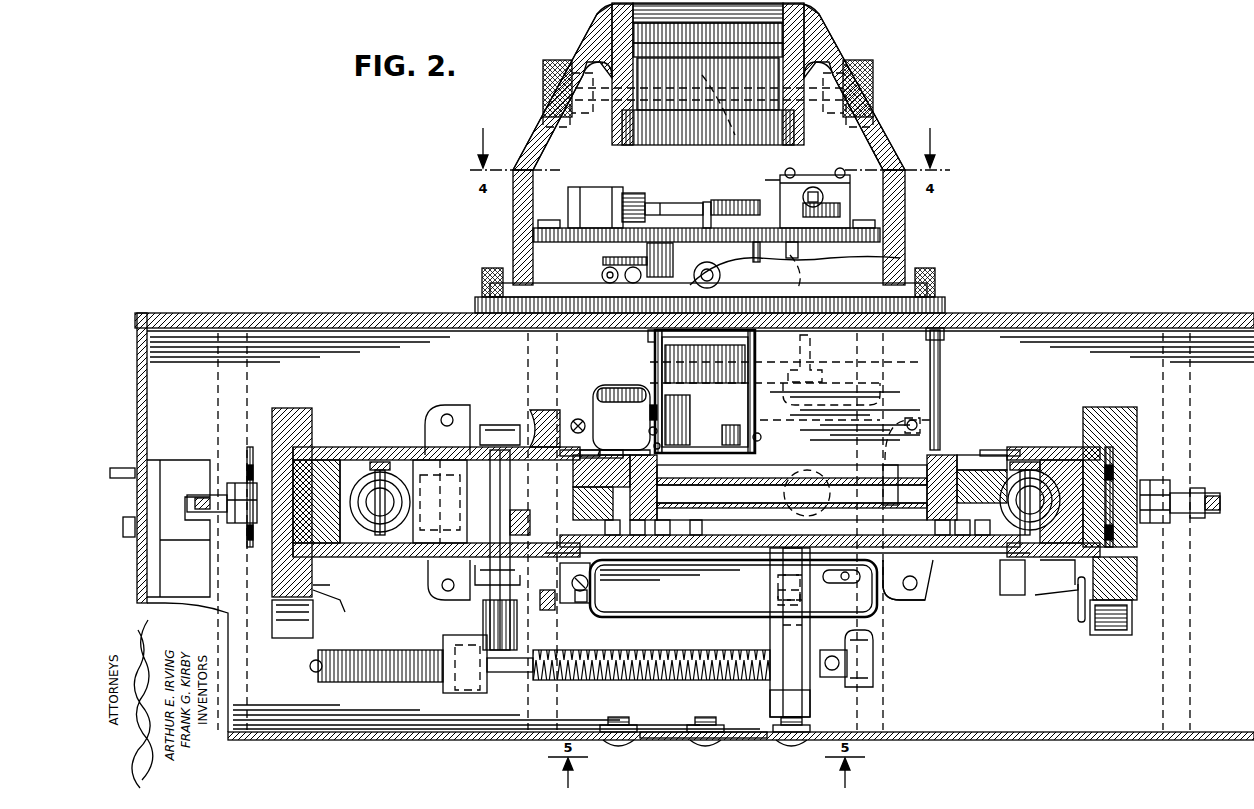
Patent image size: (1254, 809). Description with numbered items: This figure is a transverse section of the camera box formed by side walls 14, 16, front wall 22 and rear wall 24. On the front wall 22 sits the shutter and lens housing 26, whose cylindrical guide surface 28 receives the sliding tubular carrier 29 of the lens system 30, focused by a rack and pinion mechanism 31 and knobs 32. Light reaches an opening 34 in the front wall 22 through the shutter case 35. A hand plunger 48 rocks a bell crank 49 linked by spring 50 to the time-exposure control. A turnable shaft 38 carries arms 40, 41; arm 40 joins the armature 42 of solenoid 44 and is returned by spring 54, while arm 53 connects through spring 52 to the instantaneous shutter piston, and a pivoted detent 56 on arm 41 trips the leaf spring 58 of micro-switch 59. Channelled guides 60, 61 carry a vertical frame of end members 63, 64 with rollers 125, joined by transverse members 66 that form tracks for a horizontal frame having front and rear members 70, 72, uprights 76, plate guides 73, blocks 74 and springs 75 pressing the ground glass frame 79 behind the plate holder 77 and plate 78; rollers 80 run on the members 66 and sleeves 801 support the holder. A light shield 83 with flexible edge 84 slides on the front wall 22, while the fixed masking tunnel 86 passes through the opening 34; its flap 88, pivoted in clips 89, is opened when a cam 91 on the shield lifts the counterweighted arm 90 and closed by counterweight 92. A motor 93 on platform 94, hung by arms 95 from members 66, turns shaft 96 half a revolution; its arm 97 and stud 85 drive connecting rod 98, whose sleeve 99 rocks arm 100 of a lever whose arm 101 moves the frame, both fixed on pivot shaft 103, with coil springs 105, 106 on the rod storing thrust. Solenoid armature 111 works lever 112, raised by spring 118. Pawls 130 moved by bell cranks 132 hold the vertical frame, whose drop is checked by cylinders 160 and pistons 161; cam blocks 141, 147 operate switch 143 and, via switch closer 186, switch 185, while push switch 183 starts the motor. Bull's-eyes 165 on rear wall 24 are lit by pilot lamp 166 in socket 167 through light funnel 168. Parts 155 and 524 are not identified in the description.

The side wall 14 is at (1253, 575).
The side wall 16 is at (148, 425).
The front wall 22 is at (1120, 320).
The rear wall 24 is at (470, 740).
The shutter and lens housing 26 is at (897, 218).
The cylindrical guide surface 28 is at (622, 130).
The tubular carrier 29 is at (790, 50).
The lens system 30 is at (640, 60).
The rack and pinion mechanism 31 is at (726, 109).
The focusing knobs 32 is at (874, 74).
The opening 34 is at (648, 336).
The case 35 is at (800, 258).
The turnable shaft 38 is at (758, 250).
The arm 40 is at (842, 210).
The arm 41 is at (705, 208).
The armature 42 is at (822, 195).
The solenoid 44 is at (781, 178).
The hand actuated plunger 48 is at (720, 278).
The bell crank 49 is at (660, 275).
The spring 50 is at (647, 258).
The spring 52 is at (602, 274).
The arm 53 is at (605, 256).
The spring 54 is at (745, 205).
The pivoted detent 56 is at (655, 208).
The leaf spring 58 is at (638, 198).
The micro-switch 59 is at (608, 190).
The channelled guide 60 is at (1125, 570).
The channelled guide 61 is at (290, 412).
The vertical end frame member 63 is at (322, 445).
The vertical end frame member 64 is at (1100, 450).
The transverse member 66 is at (1015, 555).
The rectangular member 70 is at (996, 450).
The rectangular member 72 is at (985, 548).
The plate guide 73 is at (962, 458).
The blocks 74 is at (962, 548).
The springs 75 is at (942, 548).
The upright member 76 is at (990, 558).
The plate holder 77 is at (660, 485).
The plate 78 is at (892, 487).
The ground glass frame 79 is at (690, 545).
The rollers 80 is at (1005, 580).
The light shield 83 is at (940, 395).
The flexible edge 84 is at (940, 345).
The stud 85 is at (868, 690).
The masking tunnel 86 is at (745, 368).
The flap 88 is at (735, 440).
The clips 89 is at (654, 446).
The counterweighted arm 90 is at (652, 413).
The cam or detent 91 is at (650, 431).
The counterweight 92 is at (642, 392).
The motor 93 is at (844, 392).
The platform 94 is at (548, 612).
The arms 95 is at (908, 600).
The motor shaft 96 is at (810, 350).
The arm 97 is at (873, 640).
The connecting rod 98 is at (520, 673).
The sleeve 99 is at (655, 618).
The arm 100 is at (480, 635).
The arm 101 is at (530, 600).
The pivot 103 is at (475, 604).
The coil spring 105 is at (392, 680).
The coil spring 106 is at (640, 681).
The armature 111 is at (480, 520).
The arm or lever 112 is at (580, 598).
The spring 118 is at (516, 512).
The rollers 125 is at (1115, 540).
The pawl member 130 is at (1185, 512).
The bell crank 132 is at (1218, 503).
The cam block 141 is at (355, 592).
The switch 143 is at (286, 636).
The cam block 147 is at (1040, 592).
The pin 155 is at (823, 576).
The fluid filled cylinders 160 is at (1012, 468).
The pistons 161 is at (1040, 488).
The bull's-eyes 165 is at (793, 750).
The pilot lamp 166 is at (780, 685).
The socket 167 is at (778, 598).
The tubular light funnel 168 is at (780, 703).
The push switch 183 is at (160, 552).
The switch 185 is at (1116, 636).
The switch closer 186 is at (1060, 605).
The link 524 is at (792, 245).
The sleeves 801 is at (925, 600).